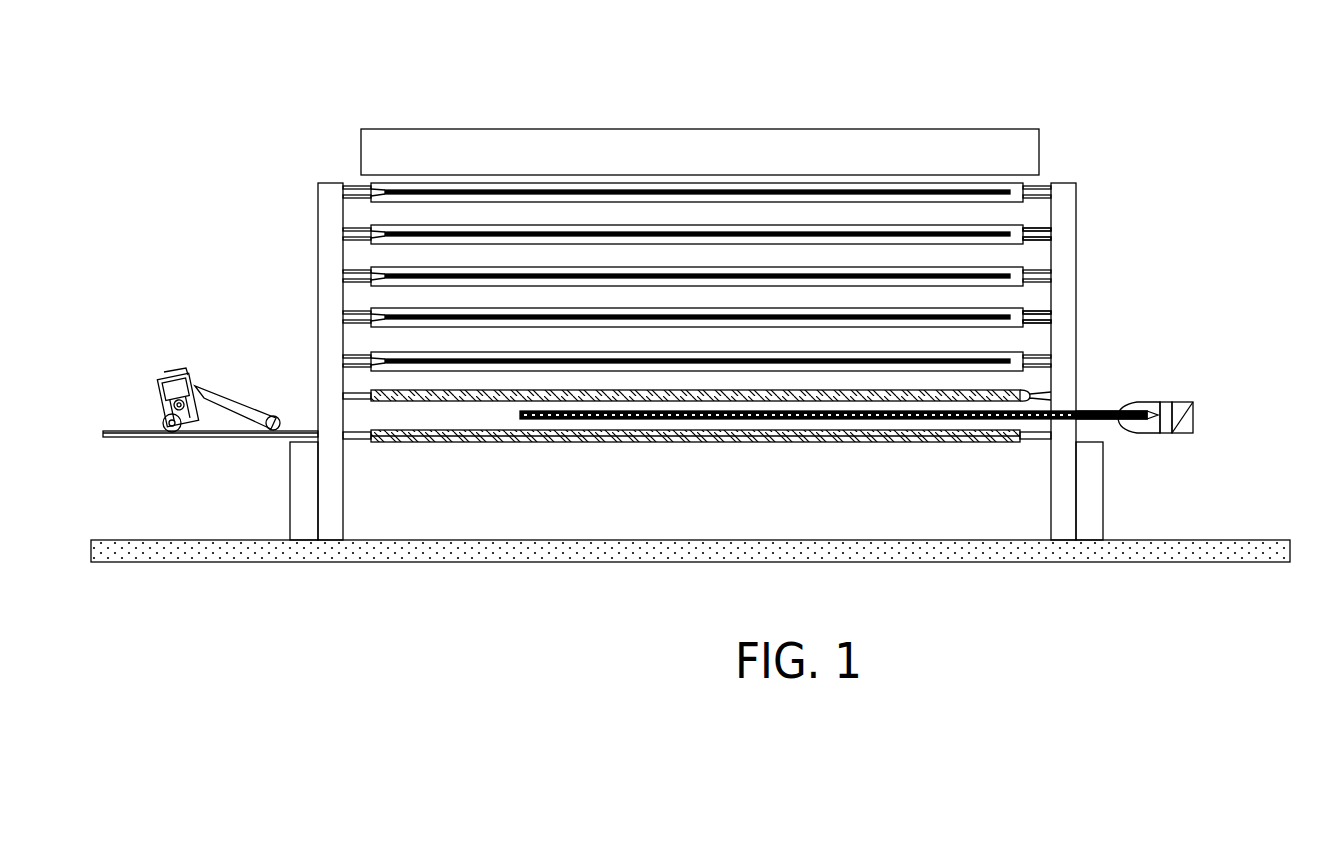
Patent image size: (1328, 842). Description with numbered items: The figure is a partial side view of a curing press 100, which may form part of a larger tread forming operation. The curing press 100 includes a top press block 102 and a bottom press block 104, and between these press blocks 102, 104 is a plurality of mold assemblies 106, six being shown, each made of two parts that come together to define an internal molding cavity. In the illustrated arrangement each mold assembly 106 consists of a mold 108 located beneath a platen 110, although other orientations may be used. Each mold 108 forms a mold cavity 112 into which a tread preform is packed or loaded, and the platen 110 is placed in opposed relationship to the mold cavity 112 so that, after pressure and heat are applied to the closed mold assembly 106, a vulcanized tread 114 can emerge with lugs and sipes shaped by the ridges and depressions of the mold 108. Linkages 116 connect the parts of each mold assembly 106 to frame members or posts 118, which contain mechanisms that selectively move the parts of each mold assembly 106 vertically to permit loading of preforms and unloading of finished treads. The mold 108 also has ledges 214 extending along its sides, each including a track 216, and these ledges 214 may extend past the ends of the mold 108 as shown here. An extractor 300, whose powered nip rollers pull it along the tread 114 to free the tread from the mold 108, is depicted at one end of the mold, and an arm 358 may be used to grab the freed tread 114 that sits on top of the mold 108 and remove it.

The curing press 100 is at (1068, 95).
The top press block 102 is at (926, 128).
The bottom press block 104 is at (1040, 512).
The mold assembly 106 is at (1050, 205).
The mold 108 is at (1015, 437).
The platen 110 is at (1010, 392).
The mold cavity 112 is at (985, 416).
The vulcanized tread 114 is at (1100, 410).
The linkage 116 is at (1037, 310).
The post 118 is at (1058, 262).
The ledge 214 is at (113, 430).
The track 216 is at (133, 430).
The extractor 300 is at (215, 360).
The arm 358 is at (1193, 414).